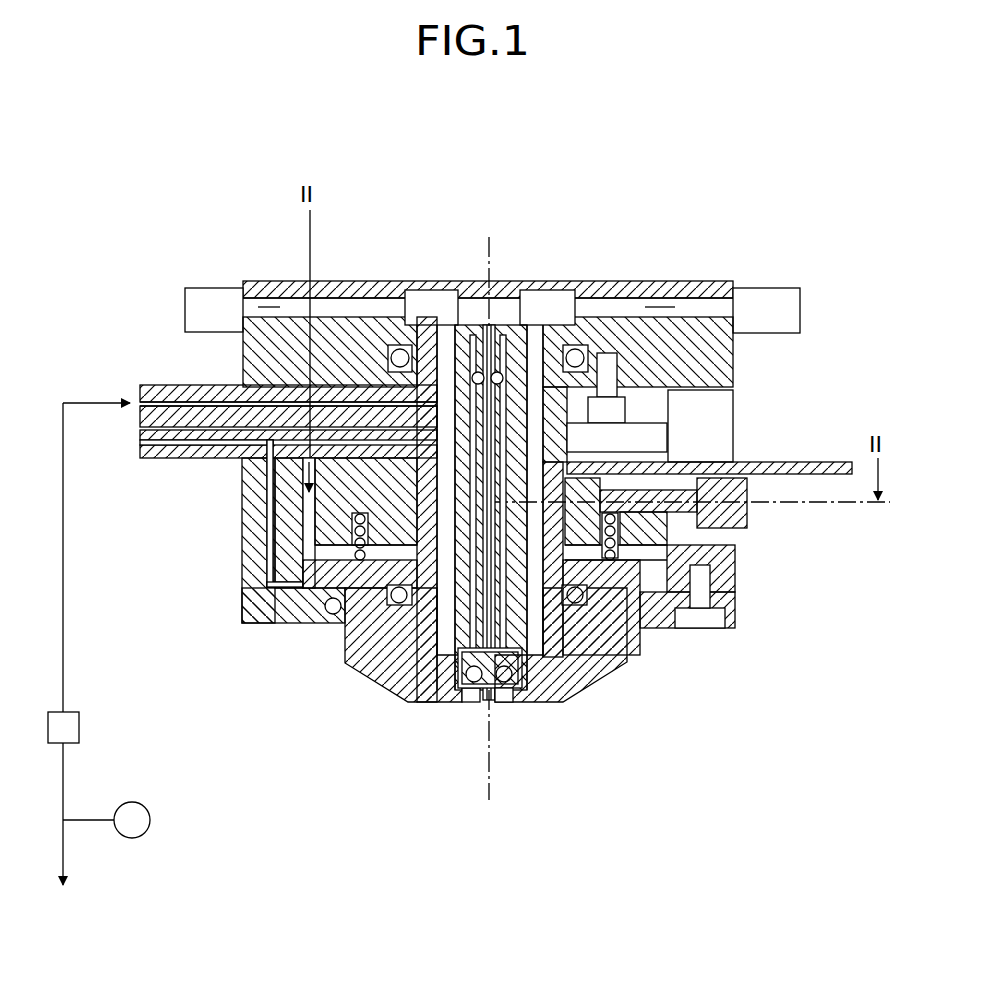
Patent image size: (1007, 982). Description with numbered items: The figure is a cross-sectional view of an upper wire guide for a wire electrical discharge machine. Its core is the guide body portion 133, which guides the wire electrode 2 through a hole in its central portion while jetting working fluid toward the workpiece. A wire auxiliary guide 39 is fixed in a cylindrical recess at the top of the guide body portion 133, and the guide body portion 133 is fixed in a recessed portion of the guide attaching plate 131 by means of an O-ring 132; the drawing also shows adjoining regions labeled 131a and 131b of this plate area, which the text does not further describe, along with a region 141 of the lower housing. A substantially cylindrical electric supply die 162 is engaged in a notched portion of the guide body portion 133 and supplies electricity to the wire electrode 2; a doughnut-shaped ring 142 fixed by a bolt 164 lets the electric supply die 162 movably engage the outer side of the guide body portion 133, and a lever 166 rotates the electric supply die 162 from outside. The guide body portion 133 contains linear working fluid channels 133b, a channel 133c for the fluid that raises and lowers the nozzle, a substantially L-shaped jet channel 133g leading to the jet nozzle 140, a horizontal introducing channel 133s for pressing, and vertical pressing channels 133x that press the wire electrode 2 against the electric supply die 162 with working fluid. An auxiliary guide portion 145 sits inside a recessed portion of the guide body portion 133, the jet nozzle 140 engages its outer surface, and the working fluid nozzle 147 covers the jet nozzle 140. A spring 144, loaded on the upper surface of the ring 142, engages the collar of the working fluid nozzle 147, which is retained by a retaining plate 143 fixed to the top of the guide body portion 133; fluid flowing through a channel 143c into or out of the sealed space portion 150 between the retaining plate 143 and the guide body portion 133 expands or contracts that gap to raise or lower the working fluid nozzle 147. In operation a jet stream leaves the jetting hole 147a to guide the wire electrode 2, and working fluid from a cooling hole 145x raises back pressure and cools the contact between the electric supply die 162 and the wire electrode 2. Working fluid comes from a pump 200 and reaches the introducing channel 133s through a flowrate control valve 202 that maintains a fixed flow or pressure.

The wire electrode 2 is at (500, 795).
The wire auxiliary guide 39 is at (496, 372).
The guide attaching plate 131 is at (716, 285).
The housing block 131a is at (533, 297).
The housing passage 131b is at (268, 304).
The O-ring 132 is at (660, 298).
The guide body portion 133 is at (265, 433).
The working fluid channel 133b is at (440, 338).
The channel 133c is at (160, 452).
The jet channel 133g is at (212, 430).
The introducing channel for pressing 133s is at (145, 392).
The pressing channel 133x is at (540, 474).
The jet nozzle 140 is at (512, 676).
The lower housing 141 is at (590, 592).
The ring 142 is at (352, 556).
The retaining plate 143 is at (262, 625).
The channel 143c is at (335, 520).
The spring 144 is at (347, 560).
The auxiliary guide portion 145 is at (548, 680).
The cooling hole 145x is at (460, 668).
The working fluid nozzle 147 is at (388, 668).
The jetting hole 147a is at (468, 695).
The space portion 150 is at (302, 623).
The electric supply die 162 is at (735, 548).
The bolt 164 is at (748, 516).
The lever 166 is at (813, 462).
The pump 200 is at (151, 820).
The flowrate control valve 202 is at (82, 726).